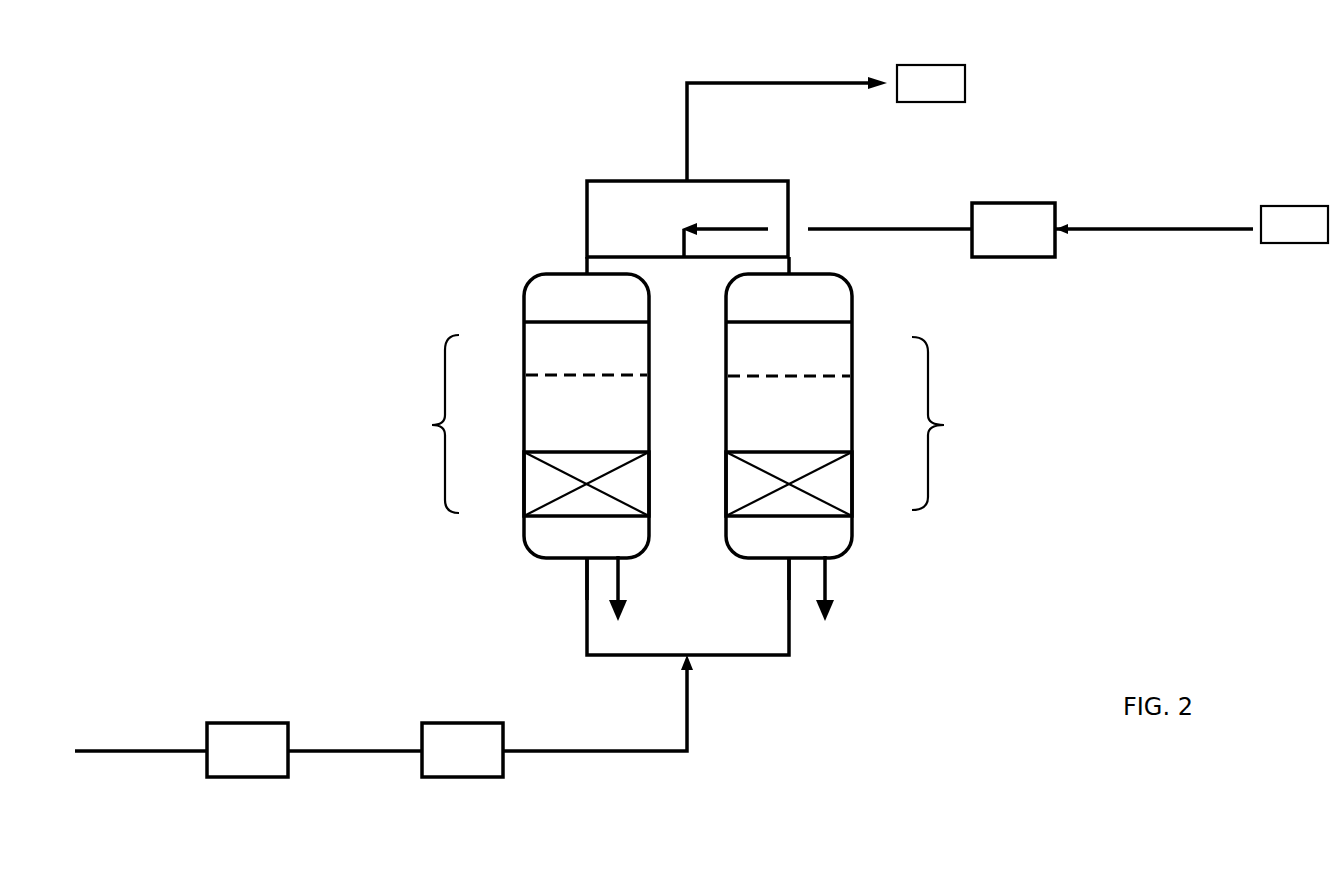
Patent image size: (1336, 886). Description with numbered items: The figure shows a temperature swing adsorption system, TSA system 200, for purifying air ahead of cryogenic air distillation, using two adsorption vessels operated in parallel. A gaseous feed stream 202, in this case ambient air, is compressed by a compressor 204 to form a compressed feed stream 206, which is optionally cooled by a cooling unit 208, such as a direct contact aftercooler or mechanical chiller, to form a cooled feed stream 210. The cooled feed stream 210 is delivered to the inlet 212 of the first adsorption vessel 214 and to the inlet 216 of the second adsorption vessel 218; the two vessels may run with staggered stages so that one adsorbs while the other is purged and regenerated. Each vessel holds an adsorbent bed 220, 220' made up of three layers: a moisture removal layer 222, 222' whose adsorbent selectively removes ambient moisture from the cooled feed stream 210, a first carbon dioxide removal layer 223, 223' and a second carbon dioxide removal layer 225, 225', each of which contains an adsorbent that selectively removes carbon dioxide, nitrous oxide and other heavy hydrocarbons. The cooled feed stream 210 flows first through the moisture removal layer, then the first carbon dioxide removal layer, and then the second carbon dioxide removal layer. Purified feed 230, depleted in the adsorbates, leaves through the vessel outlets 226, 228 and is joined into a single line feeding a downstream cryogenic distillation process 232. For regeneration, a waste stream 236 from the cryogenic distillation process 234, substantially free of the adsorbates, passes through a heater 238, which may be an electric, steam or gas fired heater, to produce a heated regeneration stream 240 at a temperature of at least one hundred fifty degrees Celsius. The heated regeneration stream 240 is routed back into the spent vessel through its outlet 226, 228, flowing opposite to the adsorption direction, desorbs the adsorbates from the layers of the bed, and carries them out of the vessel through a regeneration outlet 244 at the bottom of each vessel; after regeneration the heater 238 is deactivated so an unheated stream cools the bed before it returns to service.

The TSA system 200 is at (1066, 539).
The gaseous feed stream 202 is at (135, 748).
The compressor 204 is at (254, 777).
The compressed feed stream 206 is at (360, 748).
The cooling unit 208 is at (465, 774).
The cooled feed stream 210 is at (590, 748).
The inlet 212 is at (587, 557).
The adsorption vessel 214 is at (535, 280).
The inlet 216 is at (790, 557).
The adsorption vessel 218 is at (852, 303).
The adsorbent bed 220 is at (418, 424).
The adsorbent bed 220' is at (964, 423).
The moisture removal layer 222 is at (550, 484).
The moisture removal layer 222' is at (822, 484).
The first carbon dioxide removal layer 223 is at (586, 401).
The first carbon dioxide removal layer 223' is at (789, 401).
The second carbon dioxide removal layer 225 is at (586, 341).
The second carbon dioxide removal layer 225' is at (789, 341).
The vessel outlet 226 is at (586, 272).
The vessel outlet 228 is at (790, 275).
The purified feed 230 is at (778, 80).
The cryogenic distillation process 232 is at (931, 83).
The cryogenic distillation process 234 is at (1294, 224).
The waste stream 236 is at (1127, 222).
The heater 238 is at (995, 205).
The heated regeneration stream 240 is at (851, 228).
The regeneration outlet 244 is at (622, 585).